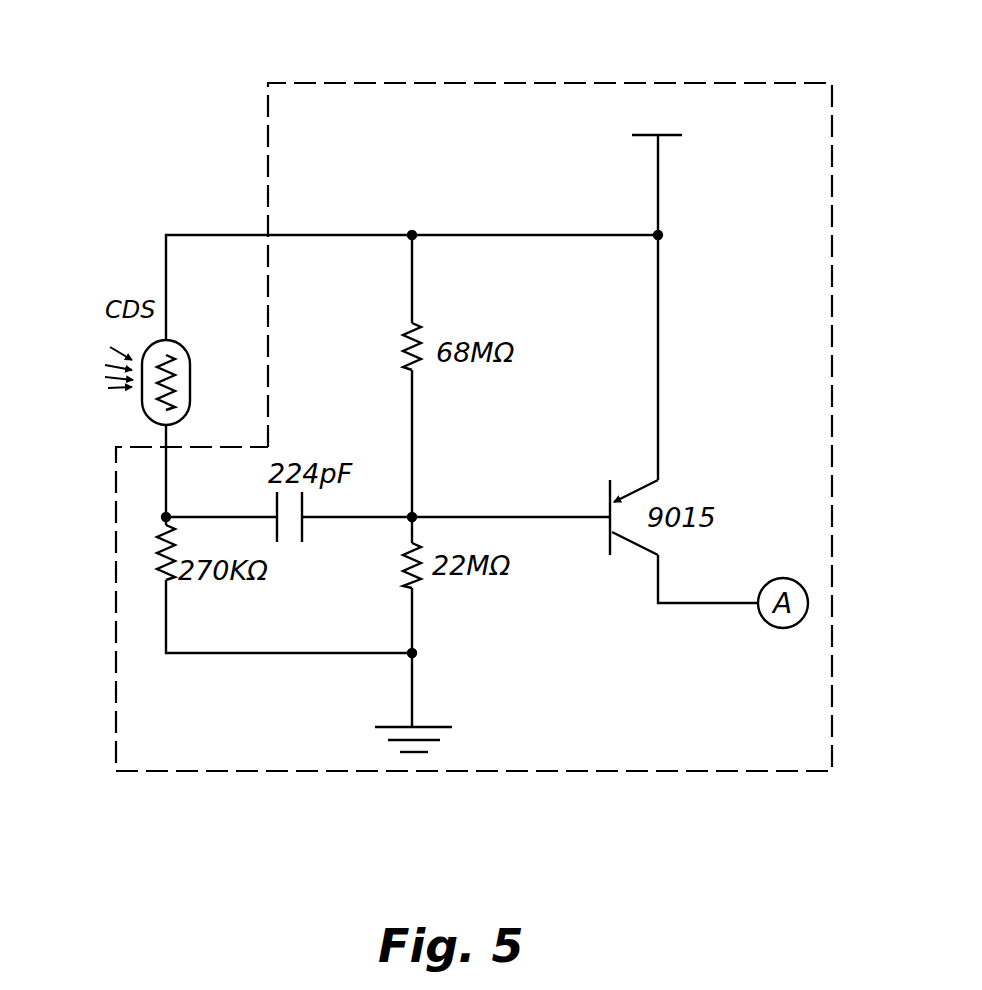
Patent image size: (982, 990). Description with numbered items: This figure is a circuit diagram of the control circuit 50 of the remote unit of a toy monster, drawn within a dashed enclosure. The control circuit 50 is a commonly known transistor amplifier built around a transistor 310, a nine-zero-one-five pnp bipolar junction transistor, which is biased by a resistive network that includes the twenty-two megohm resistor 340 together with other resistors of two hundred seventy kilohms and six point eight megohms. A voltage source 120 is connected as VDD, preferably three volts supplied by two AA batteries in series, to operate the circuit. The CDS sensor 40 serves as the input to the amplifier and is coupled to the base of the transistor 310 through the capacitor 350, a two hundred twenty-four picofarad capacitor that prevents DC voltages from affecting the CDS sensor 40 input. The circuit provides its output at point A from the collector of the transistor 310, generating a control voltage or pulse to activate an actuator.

The control circuit 50 is at (618, 82).
The voltage source 120 is at (668, 142).
The CDS sensor 40 is at (103, 350).
The transistor 310 is at (632, 478).
The capacitor 350 is at (308, 527).
The resistor 340 is at (420, 588).